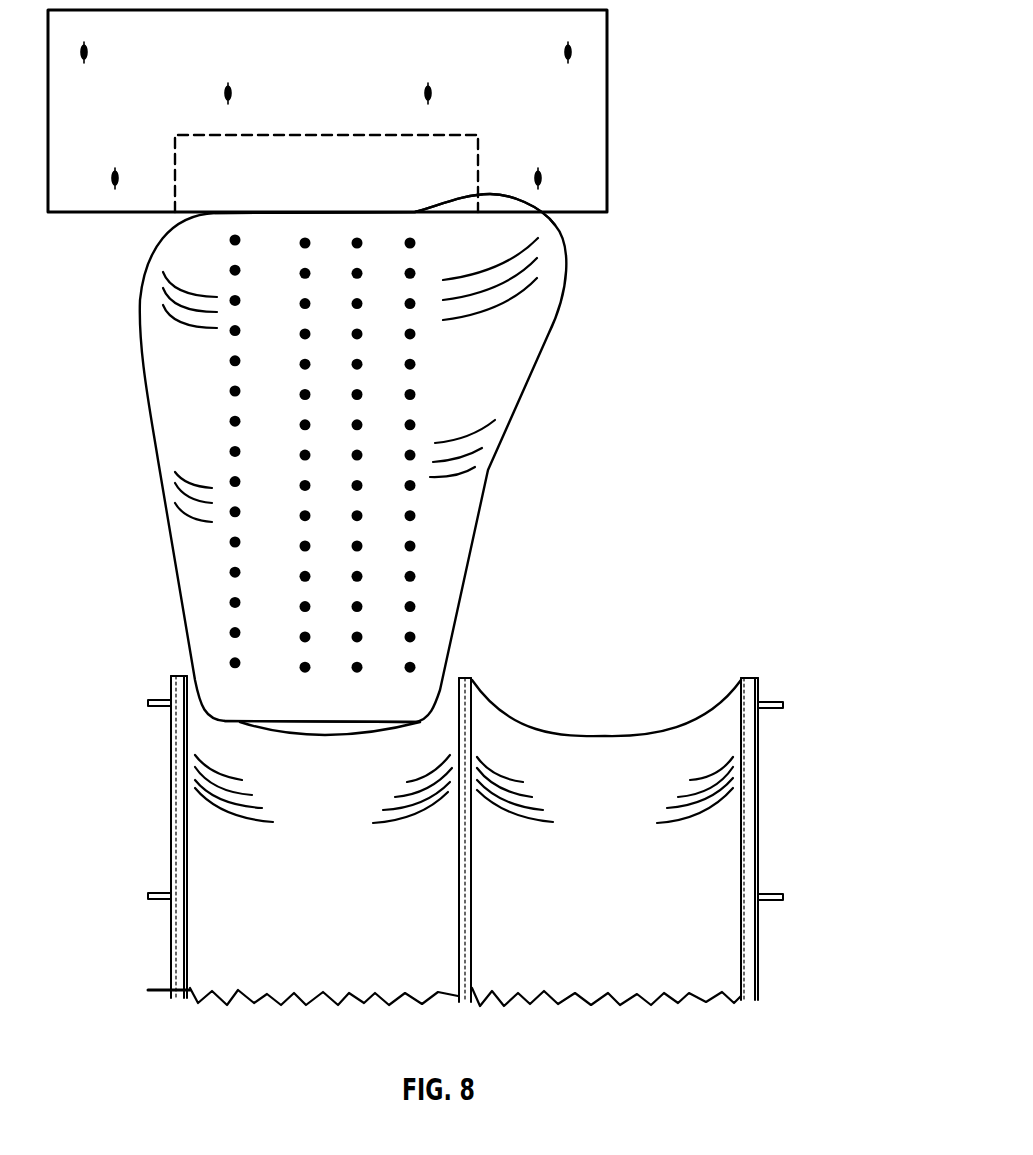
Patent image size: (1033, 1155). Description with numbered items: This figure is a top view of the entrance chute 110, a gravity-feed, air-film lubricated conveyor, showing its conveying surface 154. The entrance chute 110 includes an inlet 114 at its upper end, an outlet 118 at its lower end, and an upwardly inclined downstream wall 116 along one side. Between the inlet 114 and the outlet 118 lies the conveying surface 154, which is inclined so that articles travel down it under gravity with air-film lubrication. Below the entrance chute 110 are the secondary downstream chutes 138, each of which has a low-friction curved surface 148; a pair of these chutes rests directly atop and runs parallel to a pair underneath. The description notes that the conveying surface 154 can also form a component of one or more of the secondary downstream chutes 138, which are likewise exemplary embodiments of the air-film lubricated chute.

The entrance chute 110 is at (565, 435).
The inlet 114 is at (383, 220).
The upwardly inclined downstream wall 116 is at (462, 332).
The outlet 118 is at (422, 660).
The conveying surface 154 is at (411, 560).
The secondary downstream chutes 138 is at (773, 912).
The low-friction curved surface 148 is at (382, 977).